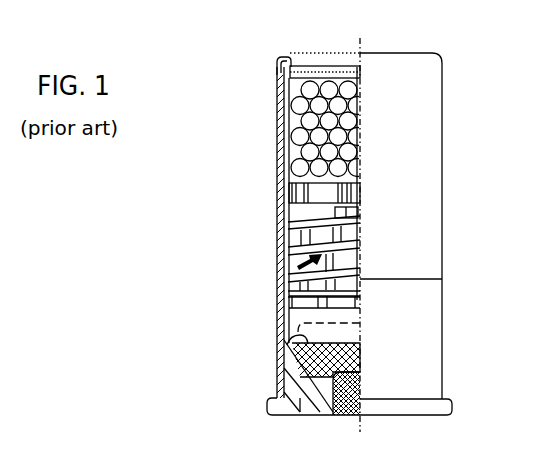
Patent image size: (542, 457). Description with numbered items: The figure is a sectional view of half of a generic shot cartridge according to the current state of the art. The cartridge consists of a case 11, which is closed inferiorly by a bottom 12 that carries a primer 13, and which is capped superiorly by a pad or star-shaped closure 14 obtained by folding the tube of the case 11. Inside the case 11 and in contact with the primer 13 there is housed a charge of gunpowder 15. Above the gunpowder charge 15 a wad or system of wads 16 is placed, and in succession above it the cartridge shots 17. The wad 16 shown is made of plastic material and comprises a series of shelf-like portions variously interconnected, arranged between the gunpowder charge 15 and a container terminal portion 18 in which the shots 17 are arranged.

The case 11 is at (278, 191).
The bottom 12 is at (294, 398).
The primer 13 is at (365, 390).
The star-shaped closure 14 is at (332, 67).
The charge of gunpowder 15 is at (284, 338).
The wad 16 is at (297, 267).
The cartridge shots 17 is at (343, 120).
The container terminal portion 18 is at (278, 112).